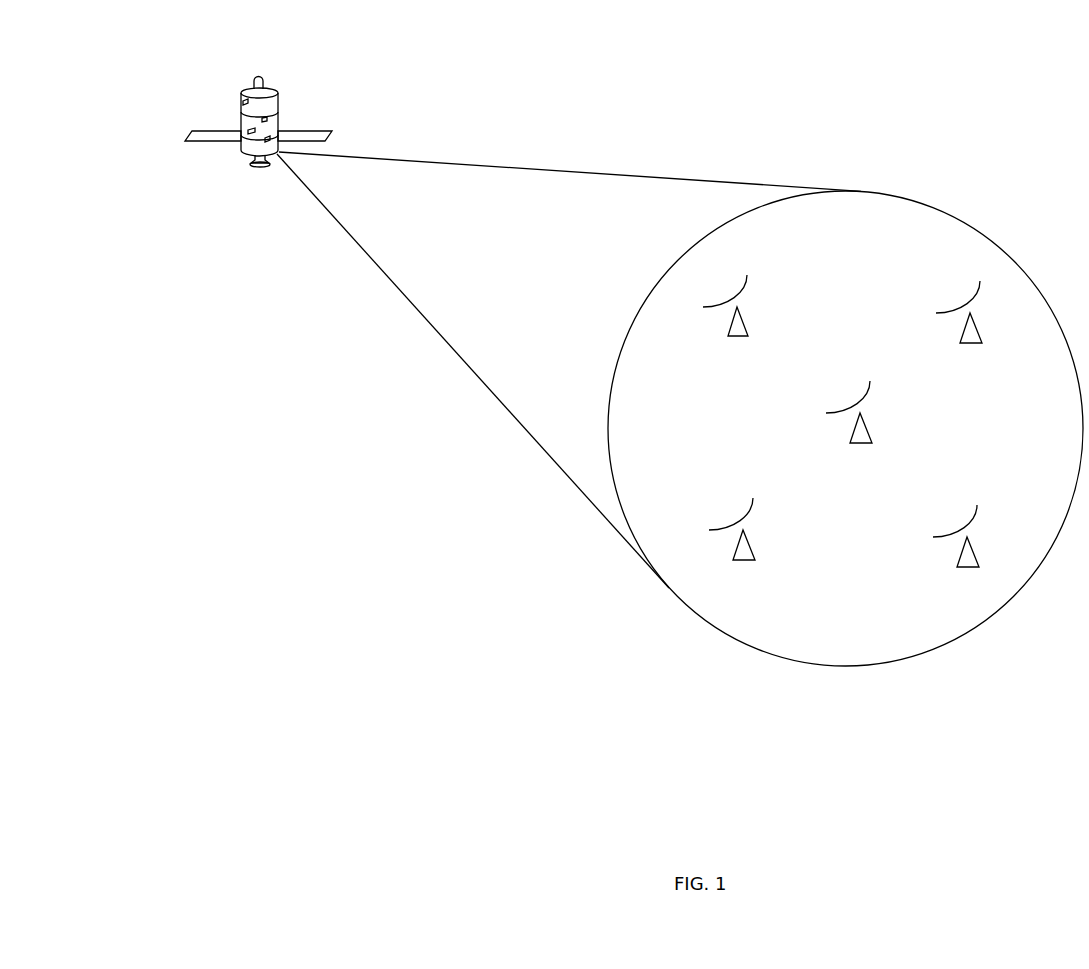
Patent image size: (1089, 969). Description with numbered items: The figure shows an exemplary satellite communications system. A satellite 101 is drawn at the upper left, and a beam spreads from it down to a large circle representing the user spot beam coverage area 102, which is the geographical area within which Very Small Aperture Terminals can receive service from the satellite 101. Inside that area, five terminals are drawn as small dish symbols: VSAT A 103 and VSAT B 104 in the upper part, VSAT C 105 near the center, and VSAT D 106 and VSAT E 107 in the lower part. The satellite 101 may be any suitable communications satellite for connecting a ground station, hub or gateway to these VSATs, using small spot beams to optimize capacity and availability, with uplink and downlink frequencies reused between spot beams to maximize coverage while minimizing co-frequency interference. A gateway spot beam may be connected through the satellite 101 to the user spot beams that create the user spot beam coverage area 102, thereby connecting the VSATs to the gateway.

The satellite 101 is at (240, 95).
The user spot beam coverage area 102 is at (768, 185).
The VSAT A 103 is at (743, 315).
The VSAT B 104 is at (976, 331).
The VSAT C 105 is at (866, 426).
The VSAT D 106 is at (749, 543).
The VSAT E 107 is at (973, 552).